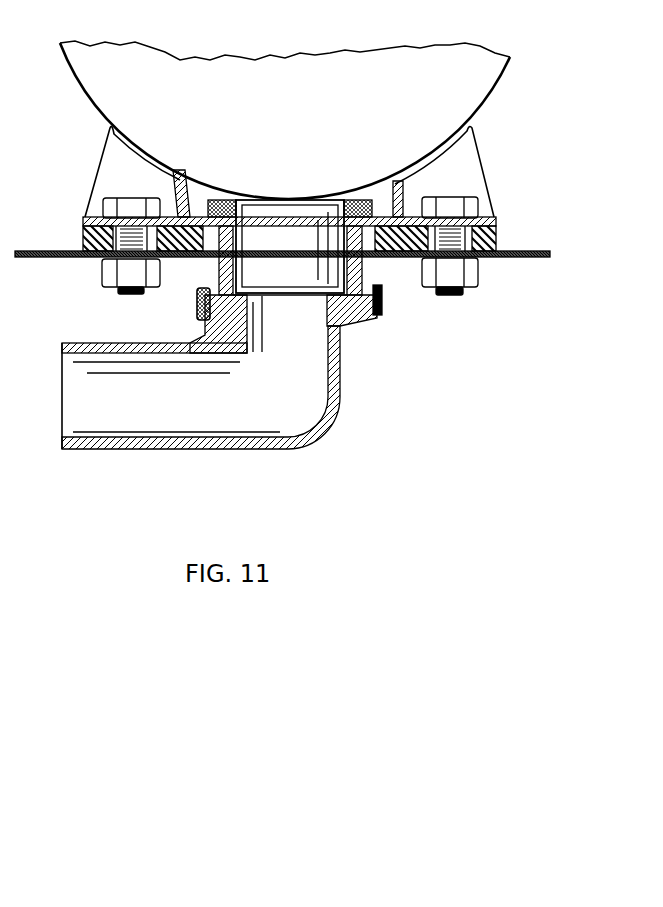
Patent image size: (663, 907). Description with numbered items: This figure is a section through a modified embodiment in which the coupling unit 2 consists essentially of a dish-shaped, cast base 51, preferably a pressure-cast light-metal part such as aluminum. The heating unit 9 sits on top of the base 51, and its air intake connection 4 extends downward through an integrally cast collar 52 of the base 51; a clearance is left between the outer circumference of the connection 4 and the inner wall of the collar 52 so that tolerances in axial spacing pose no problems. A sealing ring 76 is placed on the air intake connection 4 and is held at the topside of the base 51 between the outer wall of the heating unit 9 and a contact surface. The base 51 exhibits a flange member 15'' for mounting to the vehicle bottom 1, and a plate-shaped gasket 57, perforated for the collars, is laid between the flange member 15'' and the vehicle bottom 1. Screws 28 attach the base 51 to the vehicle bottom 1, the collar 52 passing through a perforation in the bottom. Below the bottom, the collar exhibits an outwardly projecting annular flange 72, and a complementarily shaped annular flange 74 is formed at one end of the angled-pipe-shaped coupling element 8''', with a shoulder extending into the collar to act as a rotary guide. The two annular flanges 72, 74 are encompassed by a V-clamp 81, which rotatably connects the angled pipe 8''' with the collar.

The heating unit 9 is at (317, 67).
The coupling unit 2 is at (38, 204).
The base 51 is at (407, 193).
The collar 52 is at (228, 268).
The air intake connection 4 is at (290, 217).
The sealing ring 76 is at (222, 200).
The gasket 57 is at (90, 240).
The flange member 15'' is at (463, 229).
The vehicle bottom 1 is at (517, 257).
The screws 28 is at (110, 207).
The annular flange 74 is at (211, 322).
The annular flange 72 is at (383, 294).
The V-clamp 81 is at (380, 318).
The angled-pipe-shaped coupling element 8''' is at (201, 406).